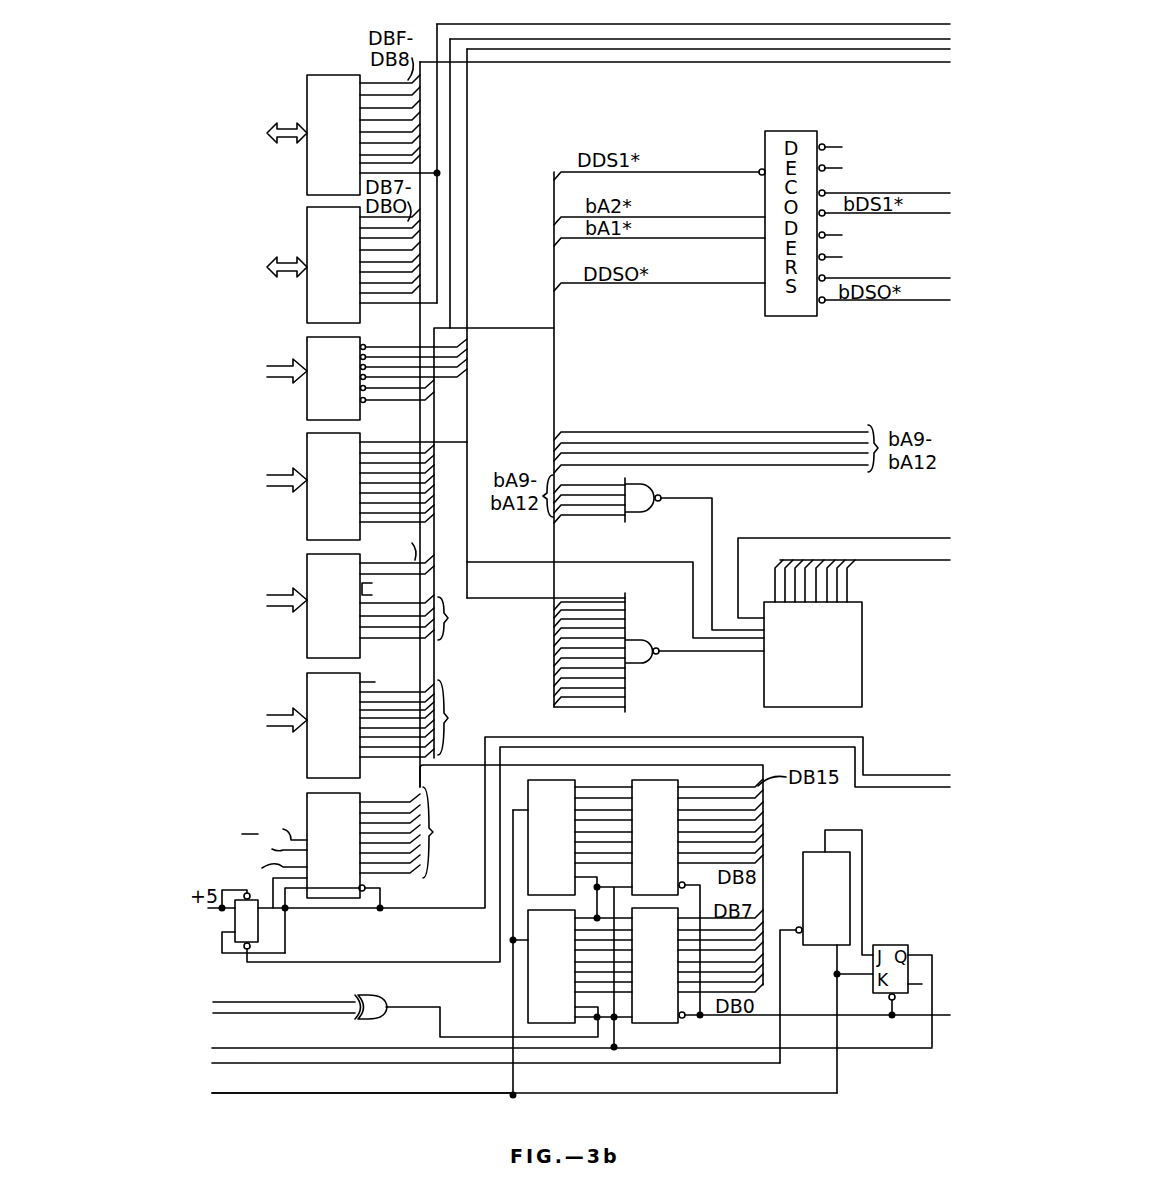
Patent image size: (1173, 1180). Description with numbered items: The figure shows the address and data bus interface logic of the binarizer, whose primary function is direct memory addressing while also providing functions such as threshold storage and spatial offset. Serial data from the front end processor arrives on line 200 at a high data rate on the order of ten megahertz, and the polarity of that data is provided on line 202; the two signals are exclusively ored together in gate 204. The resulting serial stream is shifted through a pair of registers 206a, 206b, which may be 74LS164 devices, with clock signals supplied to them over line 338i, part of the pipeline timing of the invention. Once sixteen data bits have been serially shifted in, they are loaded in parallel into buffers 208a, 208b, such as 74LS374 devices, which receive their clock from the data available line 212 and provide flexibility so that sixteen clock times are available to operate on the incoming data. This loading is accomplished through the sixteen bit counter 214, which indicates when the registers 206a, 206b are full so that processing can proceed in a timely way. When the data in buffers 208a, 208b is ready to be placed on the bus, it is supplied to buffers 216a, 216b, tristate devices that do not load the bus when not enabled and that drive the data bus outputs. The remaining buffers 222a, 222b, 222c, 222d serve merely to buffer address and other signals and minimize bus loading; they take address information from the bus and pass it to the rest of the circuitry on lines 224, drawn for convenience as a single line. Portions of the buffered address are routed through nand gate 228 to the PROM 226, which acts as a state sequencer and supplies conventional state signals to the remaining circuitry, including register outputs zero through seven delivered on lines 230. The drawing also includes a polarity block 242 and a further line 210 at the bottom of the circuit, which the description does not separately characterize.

The buffer 216a is at (338, 82).
The buffer 216b is at (310, 220).
The buffer 222a is at (307, 353).
The buffer 222b is at (307, 450).
The buffer 222c is at (307, 567).
The buffer 222d is at (307, 674).
The lines 224 is at (440, 668).
The PROM 226 is at (862, 632).
The nand gate 228 is at (648, 664).
The lines 230 is at (893, 563).
The polarity register 242 is at (475, 875).
The register 206a is at (528, 985).
The register 206b is at (560, 783).
The buffer 208a is at (652, 1024).
The buffer 208b is at (669, 907).
The sixteen bit counter 214 is at (817, 852).
The line 200 is at (282, 1015).
The line 202 is at (255, 1001).
The gate 204 is at (378, 1020).
The control line 210 is at (225, 1097).
The data available line 212 is at (272, 1048).
The line 338i is at (328, 1097).